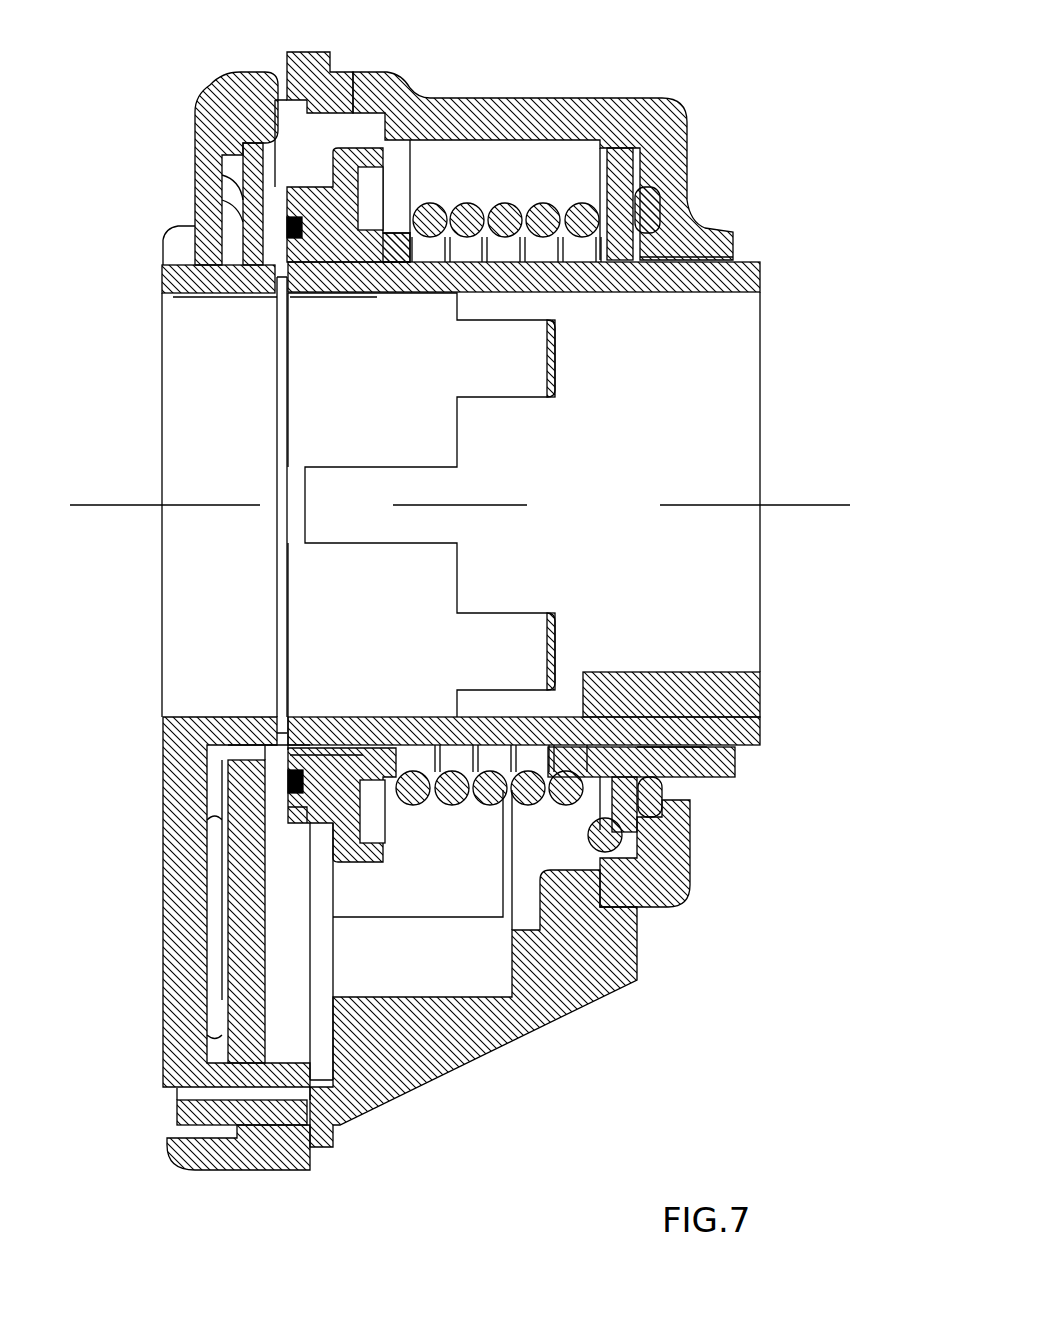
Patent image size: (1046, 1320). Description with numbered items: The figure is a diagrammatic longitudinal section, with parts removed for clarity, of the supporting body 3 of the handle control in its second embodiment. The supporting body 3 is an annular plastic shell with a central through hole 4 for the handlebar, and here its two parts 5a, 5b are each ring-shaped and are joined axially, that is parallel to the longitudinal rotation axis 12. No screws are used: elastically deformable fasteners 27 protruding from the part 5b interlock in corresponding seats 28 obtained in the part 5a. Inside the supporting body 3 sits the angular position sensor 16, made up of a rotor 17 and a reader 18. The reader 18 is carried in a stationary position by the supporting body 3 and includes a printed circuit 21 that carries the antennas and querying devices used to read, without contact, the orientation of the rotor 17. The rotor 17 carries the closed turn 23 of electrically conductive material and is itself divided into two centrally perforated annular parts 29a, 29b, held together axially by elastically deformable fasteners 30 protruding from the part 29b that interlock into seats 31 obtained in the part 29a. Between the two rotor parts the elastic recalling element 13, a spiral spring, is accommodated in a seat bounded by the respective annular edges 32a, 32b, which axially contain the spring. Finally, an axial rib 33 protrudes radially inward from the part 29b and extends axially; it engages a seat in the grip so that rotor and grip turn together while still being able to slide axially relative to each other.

The supporting body 3 is at (354, 1182).
The central through hole 4 is at (212, 714).
The part of the supporting body 5a is at (198, 137).
The part of the supporting body 5b is at (680, 127).
The longitudinal rotation axis 12 is at (120, 502).
The elastic recalling element 13 is at (519, 184).
The angular position sensor 16 is at (372, 982).
The rotor 17 is at (318, 150).
The reader 18 is at (292, 969).
The printed circuit 21 is at (257, 790).
The closed turn 23 is at (287, 223).
The elastically deformable fasteners 27 is at (227, 1130).
The seats 28 is at (176, 1131).
The part of the rotor 29a is at (343, 172).
The part of the rotor 29b is at (784, 267).
The elastically deformable fasteners 30 is at (352, 254).
The seats 31 is at (358, 256).
The annular edge 32a is at (405, 238).
The annular edge 32b is at (601, 176).
The axial rib 33 is at (734, 708).